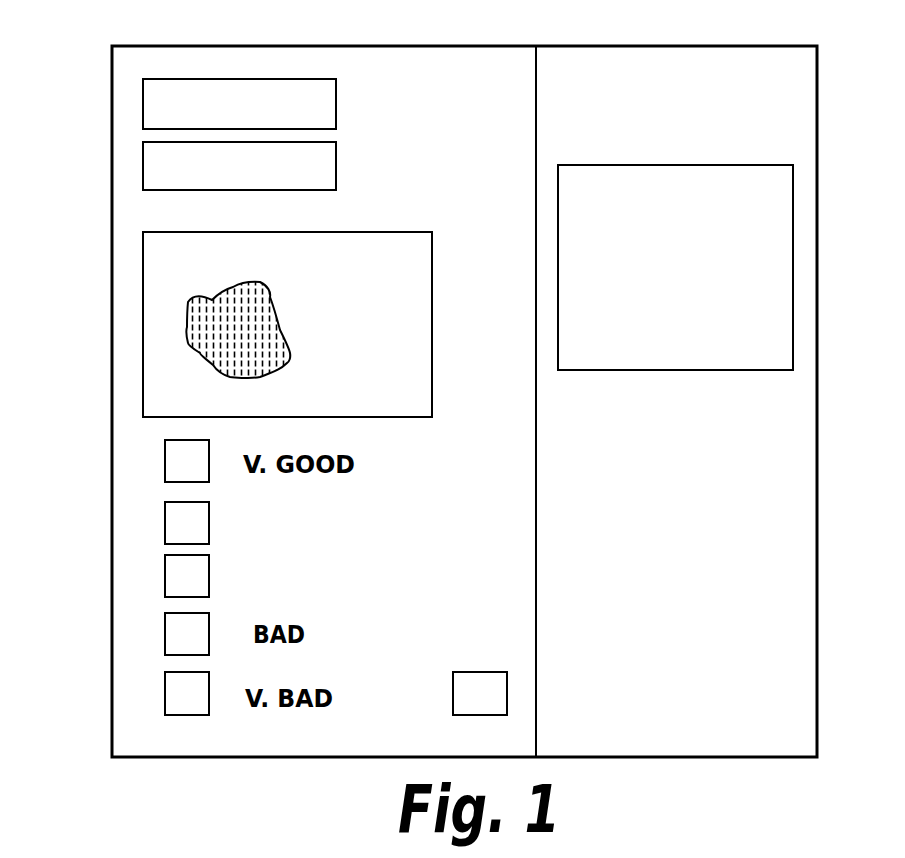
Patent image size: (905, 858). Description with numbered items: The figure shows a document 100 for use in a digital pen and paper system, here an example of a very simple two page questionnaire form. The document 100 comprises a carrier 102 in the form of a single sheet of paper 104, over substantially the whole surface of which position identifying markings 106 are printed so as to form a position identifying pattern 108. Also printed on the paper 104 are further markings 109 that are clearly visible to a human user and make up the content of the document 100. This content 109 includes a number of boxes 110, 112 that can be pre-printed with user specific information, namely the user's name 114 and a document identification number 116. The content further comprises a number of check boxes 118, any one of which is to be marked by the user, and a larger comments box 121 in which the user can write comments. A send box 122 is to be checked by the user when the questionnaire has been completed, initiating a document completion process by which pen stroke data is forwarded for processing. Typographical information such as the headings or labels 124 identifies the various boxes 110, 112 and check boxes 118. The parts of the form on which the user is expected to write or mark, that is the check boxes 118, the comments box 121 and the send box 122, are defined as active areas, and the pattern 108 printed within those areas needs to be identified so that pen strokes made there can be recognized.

The document 100 is at (383, 70).
The carrier 102 is at (123, 112).
The sheet of paper 104 is at (123, 67).
The position identifying markings 106 is at (252, 320).
The position identifying pattern 108 is at (213, 372).
The further markings 109 is at (165, 460).
The box 110 is at (337, 105).
The box 112 is at (337, 165).
The user's name 114 is at (130, 128).
The document identification number 116 is at (308, 170).
The check boxes 118 is at (165, 525).
The comments box 121 is at (702, 371).
The send box 122 is at (507, 689).
The headings or labels 124 is at (358, 519).